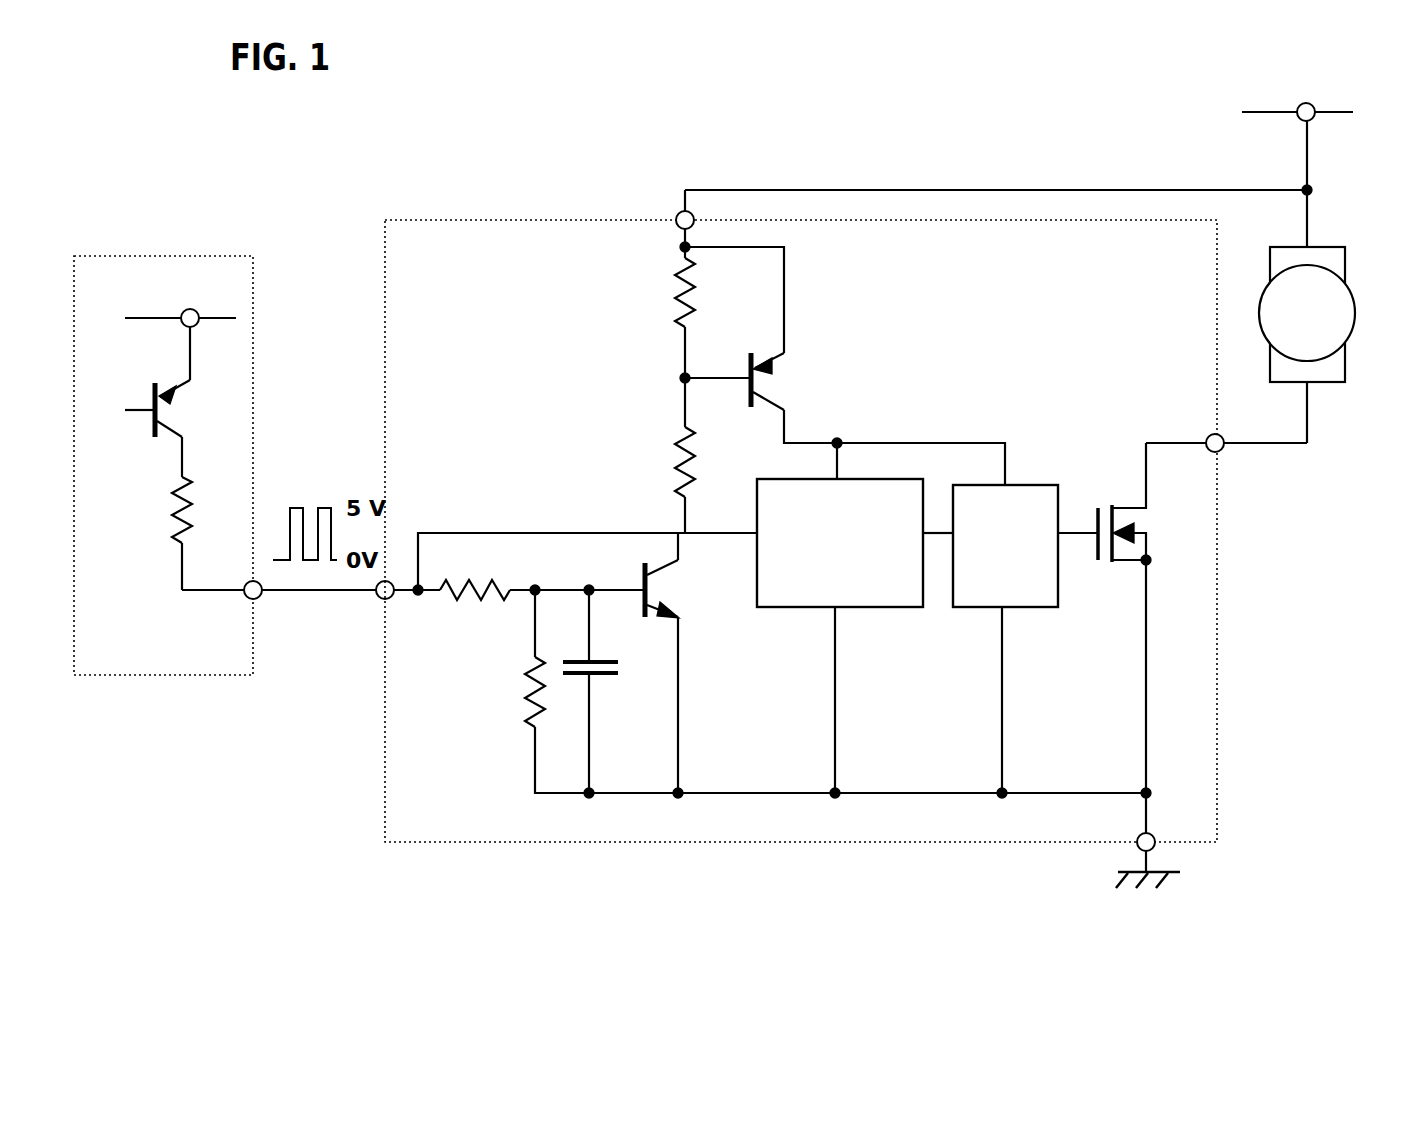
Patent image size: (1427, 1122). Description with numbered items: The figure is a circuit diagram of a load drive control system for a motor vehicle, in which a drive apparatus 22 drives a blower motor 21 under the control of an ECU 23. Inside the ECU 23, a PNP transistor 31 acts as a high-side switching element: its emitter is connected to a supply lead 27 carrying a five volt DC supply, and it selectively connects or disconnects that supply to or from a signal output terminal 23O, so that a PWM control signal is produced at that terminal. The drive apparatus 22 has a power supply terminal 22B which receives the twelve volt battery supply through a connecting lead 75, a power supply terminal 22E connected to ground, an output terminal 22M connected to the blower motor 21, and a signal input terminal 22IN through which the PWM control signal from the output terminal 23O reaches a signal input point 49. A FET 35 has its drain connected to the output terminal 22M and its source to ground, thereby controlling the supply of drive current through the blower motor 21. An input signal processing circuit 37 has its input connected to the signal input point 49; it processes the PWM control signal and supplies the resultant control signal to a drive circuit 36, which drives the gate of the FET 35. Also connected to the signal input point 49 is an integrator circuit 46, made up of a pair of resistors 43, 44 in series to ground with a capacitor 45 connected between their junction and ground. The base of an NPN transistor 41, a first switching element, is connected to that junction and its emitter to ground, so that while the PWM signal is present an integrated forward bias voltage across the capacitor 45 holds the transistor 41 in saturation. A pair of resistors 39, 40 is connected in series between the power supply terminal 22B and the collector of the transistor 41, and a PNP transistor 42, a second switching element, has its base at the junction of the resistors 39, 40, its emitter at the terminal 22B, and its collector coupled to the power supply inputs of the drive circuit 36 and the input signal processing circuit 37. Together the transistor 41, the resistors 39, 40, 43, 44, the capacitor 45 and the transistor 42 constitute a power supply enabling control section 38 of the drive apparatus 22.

The blower motor 21 is at (1348, 356).
The drive apparatus 22 is at (1211, 573).
The power supply terminal 22B is at (680, 216).
The output terminal 22M is at (1224, 454).
The power supply terminal 22E is at (1162, 855).
The signal input terminal 22IN is at (375, 596).
The ECU 23 is at (176, 250).
The signal output terminal 23O is at (259, 602).
The supply lead 27 is at (218, 308).
The PNP transistor 31 is at (152, 440).
The FET 35 is at (1118, 578).
The drive circuit 36 is at (1036, 478).
The input signal processing circuit 37 is at (862, 607).
The power supply enabling control section 38 is at (899, 341).
The resistor 39 is at (667, 314).
The resistor 40 is at (692, 460).
The NPN transistor 41 is at (682, 605).
The PNP transistor 42 is at (796, 366).
The resistor 43 is at (461, 603).
The resistor 44 is at (517, 686).
The capacitor 45 is at (603, 688).
The integrator circuit 46 is at (541, 602).
The signal input point 49 is at (418, 583).
The connecting lead 75 is at (1280, 103).